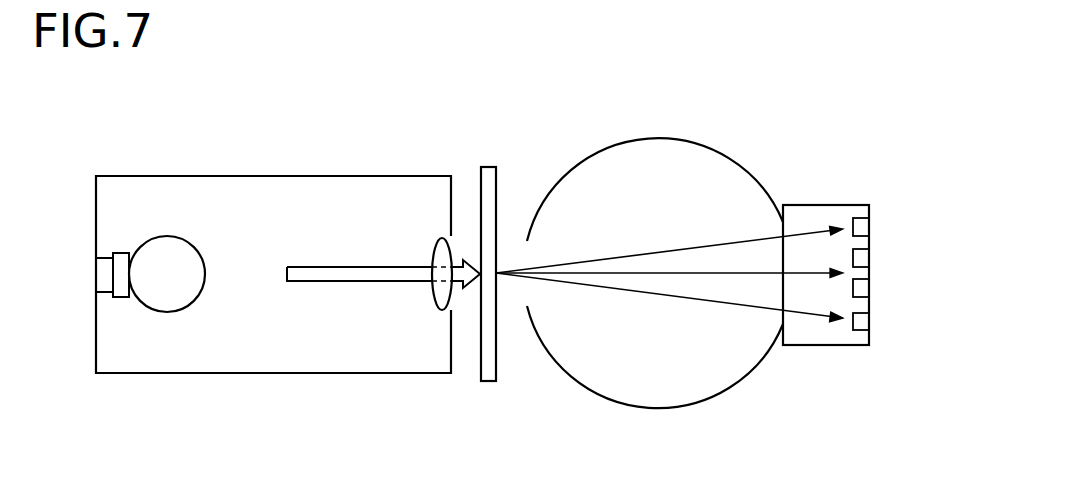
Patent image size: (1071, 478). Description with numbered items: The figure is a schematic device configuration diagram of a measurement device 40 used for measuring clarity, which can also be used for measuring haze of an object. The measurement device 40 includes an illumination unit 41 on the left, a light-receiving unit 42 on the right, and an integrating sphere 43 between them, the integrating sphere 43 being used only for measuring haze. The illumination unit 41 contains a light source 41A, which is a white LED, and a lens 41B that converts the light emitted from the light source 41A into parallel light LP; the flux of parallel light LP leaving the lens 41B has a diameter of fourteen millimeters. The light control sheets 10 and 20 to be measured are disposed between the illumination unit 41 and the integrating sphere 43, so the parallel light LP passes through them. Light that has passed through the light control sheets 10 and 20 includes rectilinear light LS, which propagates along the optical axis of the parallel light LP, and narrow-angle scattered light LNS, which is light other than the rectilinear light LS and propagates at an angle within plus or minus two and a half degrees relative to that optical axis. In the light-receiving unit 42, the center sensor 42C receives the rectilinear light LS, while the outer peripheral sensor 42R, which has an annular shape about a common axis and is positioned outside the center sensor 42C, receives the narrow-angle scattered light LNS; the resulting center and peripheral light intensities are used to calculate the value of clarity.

The measurement device 40 is at (800, 108).
The illumination unit 41 is at (273, 175).
The light source 41A is at (162, 313).
The lens 41B is at (432, 297).
The parallel light LP is at (453, 262).
The light control sheet 10 is at (488, 165).
The light control sheet 20 is at (488, 274).
The integrating sphere 43 is at (660, 409).
The narrow-angle scattered light LNS is at (671, 251).
The rectilinear light LS is at (718, 273).
The light-receiving unit 42 is at (825, 204).
The outer peripheral sensor 42R is at (871, 226).
The center sensor 42C is at (871, 250).